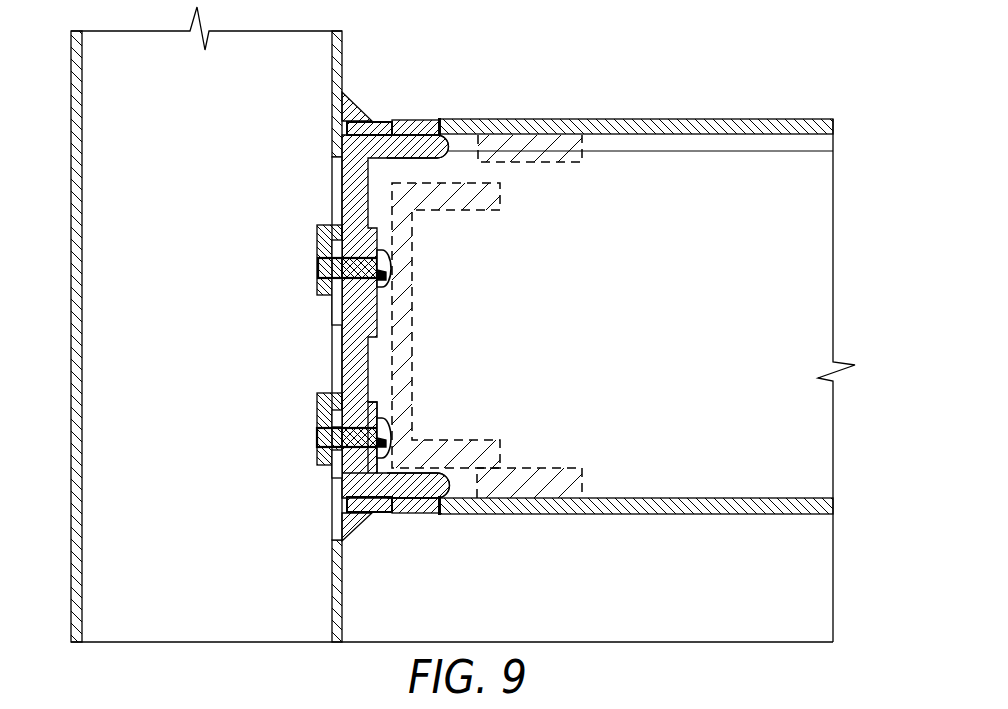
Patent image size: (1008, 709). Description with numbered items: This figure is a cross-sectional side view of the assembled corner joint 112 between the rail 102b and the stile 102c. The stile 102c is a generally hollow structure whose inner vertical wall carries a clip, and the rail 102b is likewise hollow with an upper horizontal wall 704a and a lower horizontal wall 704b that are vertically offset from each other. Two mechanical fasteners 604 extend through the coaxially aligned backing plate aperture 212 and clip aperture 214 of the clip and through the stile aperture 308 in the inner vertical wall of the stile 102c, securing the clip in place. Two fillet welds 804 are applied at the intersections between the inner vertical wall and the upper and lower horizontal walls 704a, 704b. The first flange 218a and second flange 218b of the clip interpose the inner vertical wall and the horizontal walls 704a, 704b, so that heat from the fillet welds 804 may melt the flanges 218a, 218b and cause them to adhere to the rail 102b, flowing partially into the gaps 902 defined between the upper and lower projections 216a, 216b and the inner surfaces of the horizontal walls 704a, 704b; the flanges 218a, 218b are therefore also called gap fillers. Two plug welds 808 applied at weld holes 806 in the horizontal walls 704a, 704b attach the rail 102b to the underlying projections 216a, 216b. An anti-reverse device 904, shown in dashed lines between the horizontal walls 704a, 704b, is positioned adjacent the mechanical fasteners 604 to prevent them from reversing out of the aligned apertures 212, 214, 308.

The corner joint 112 is at (536, 46).
The rail 102b is at (697, 322).
The stile 102c is at (222, 135).
The backing plate aperture 212 is at (318, 273).
The clip aperture 214 is at (378, 278).
The upper projection 216a is at (437, 153).
The lower projection 216b is at (438, 470).
The first flange 218a is at (347, 128).
The second flange 218b is at (347, 497).
The stile aperture 308 is at (317, 262).
The mechanical fastener 604 is at (388, 254).
The upper horizontal wall 704a is at (663, 118).
The lower horizontal wall 704b is at (690, 514).
The fillet weld 804 is at (351, 95).
The weld hole 806 is at (438, 120).
The plug weld 808 is at (410, 120).
The gap 902 is at (372, 132).
The anti-reverse device 904 is at (555, 163).